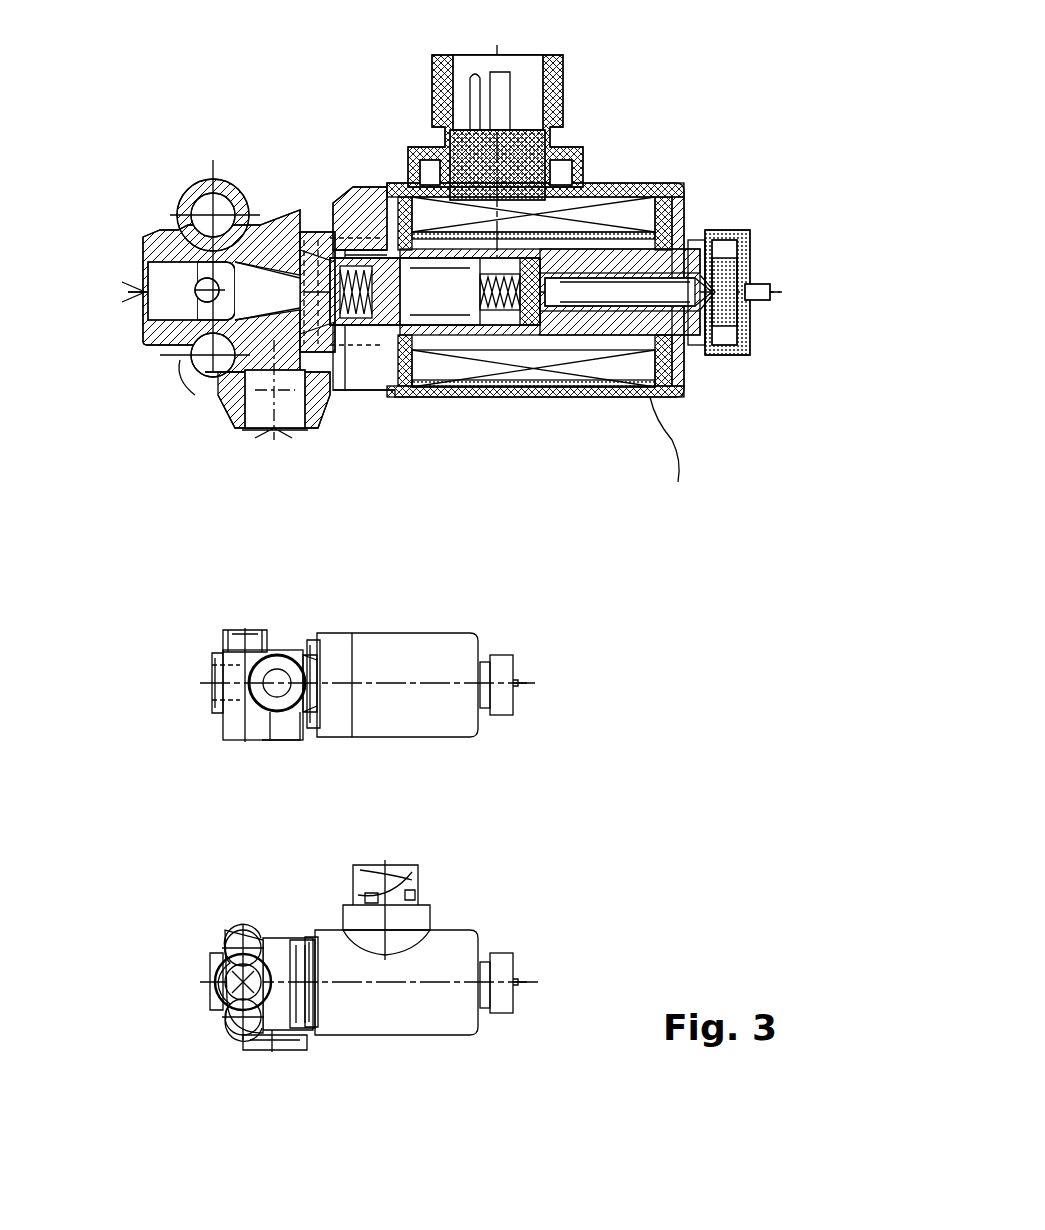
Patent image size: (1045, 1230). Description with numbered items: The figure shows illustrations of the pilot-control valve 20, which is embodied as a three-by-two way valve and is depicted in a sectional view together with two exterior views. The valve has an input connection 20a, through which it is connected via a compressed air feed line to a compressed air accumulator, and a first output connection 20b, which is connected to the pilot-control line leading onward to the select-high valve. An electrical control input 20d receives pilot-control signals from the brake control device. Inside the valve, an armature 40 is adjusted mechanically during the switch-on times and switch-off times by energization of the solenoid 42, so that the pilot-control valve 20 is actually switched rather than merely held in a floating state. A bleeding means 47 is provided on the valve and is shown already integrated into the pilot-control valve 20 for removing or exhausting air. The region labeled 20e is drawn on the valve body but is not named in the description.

The pilot-control valve 20 is at (650, 397).
The input connection 20a is at (140, 302).
The first output connection 20b is at (265, 437).
The electrical control input 20d is at (555, 92).
The flange between valve body and coil housing 20e is at (300, 232).
The armature 40 is at (425, 322).
The solenoid 42 is at (521, 372).
The bleeding means 47 is at (748, 308).